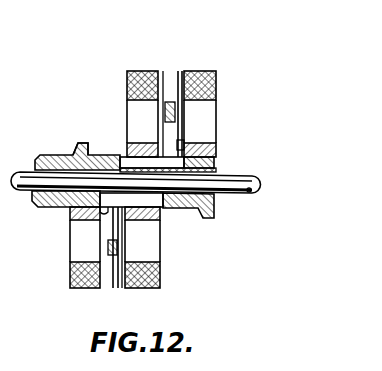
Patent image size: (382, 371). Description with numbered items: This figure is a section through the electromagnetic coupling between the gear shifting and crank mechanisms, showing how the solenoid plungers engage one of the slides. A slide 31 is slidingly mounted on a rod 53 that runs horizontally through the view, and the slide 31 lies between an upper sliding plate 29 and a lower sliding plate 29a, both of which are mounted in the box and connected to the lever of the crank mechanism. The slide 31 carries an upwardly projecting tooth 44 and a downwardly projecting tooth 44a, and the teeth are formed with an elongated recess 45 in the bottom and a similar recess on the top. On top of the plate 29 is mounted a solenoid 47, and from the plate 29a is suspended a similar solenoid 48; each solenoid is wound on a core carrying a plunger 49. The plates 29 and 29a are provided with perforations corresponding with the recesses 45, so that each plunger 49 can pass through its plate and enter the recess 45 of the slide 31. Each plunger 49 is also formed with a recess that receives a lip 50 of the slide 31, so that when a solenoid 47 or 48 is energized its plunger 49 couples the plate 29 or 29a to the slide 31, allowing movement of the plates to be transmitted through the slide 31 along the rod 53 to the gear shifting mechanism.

The slide 31 is at (50, 154).
The upwardly projecting tooth 44 is at (79, 148).
The downwardly projecting tooth 44a is at (206, 212).
The elongated recess 45 is at (125, 157).
The solenoid 47 is at (217, 81).
The solenoid 48 is at (71, 278).
The plunger 49 is at (178, 76).
The sliding plate 29 is at (205, 142).
The sliding plate 29a is at (150, 222).
The lip 50 is at (217, 162).
The rod 53 is at (244, 191).